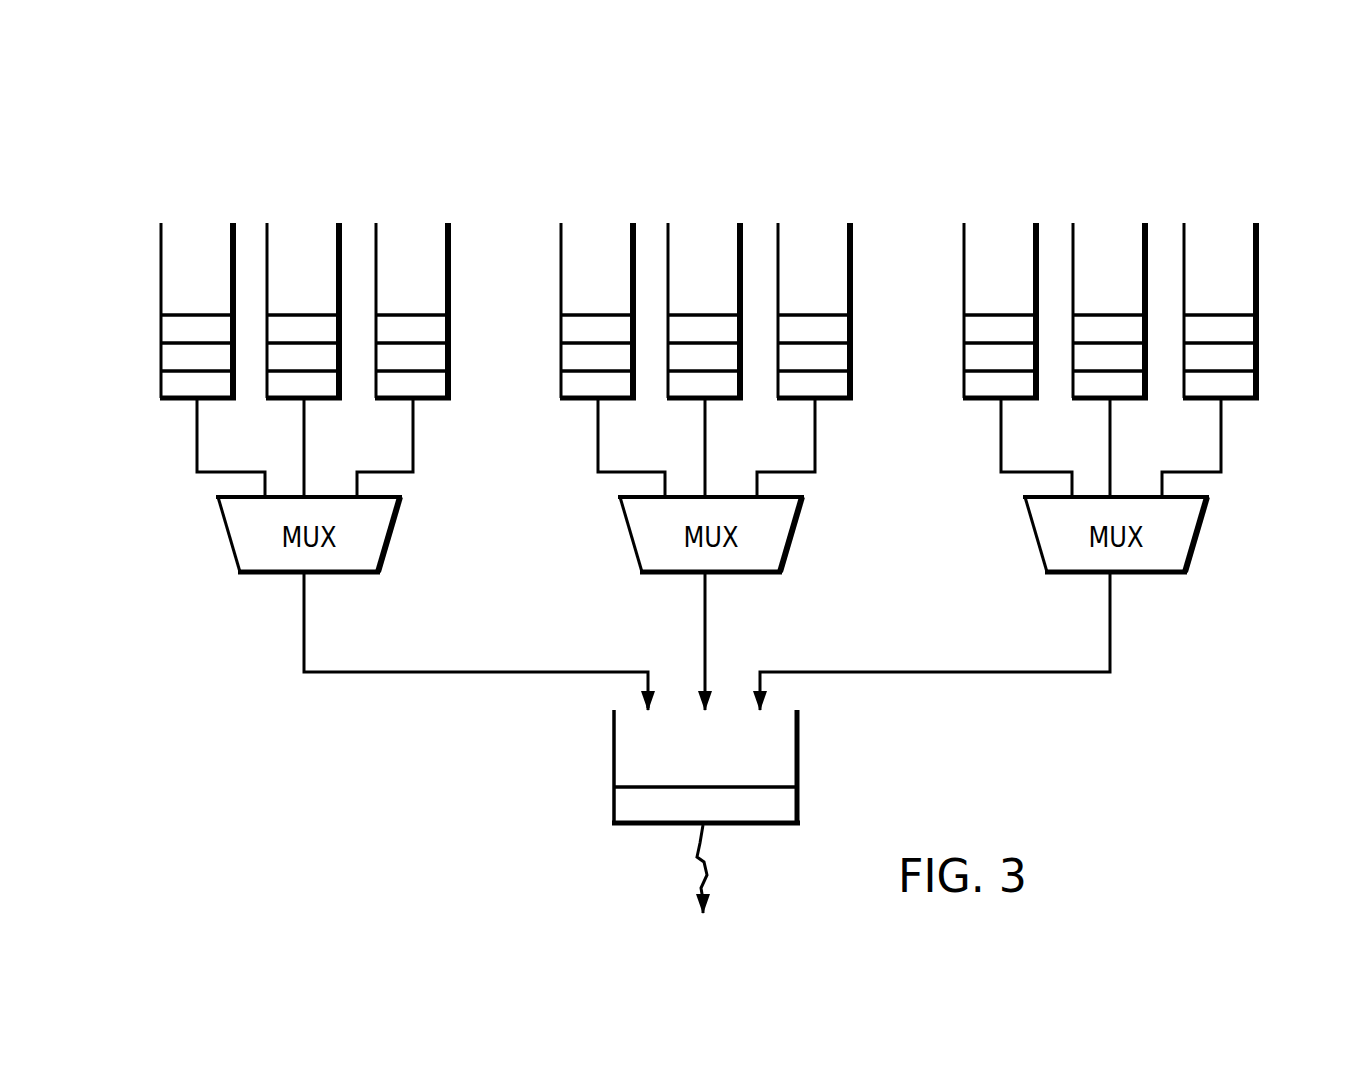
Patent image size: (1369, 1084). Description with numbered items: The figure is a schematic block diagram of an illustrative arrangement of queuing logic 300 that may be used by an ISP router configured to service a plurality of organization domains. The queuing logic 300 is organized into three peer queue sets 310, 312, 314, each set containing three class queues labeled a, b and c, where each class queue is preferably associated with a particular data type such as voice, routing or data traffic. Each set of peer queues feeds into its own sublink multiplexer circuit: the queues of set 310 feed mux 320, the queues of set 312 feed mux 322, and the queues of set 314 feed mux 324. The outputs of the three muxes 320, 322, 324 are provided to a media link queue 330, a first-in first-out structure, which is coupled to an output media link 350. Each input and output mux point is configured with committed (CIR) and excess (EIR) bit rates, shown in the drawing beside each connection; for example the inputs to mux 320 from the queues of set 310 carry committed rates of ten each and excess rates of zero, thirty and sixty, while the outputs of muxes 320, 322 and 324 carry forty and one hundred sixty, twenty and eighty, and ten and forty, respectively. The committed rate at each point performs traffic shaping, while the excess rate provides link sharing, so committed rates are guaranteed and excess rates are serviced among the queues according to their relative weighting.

The queuing logic 300 is at (1162, 126).
The peer queue set 310 is at (132, 246).
The peer queue set 312 is at (870, 246).
The peer queue set 314 is at (1286, 247).
The sublink multiplexer circuit 320 is at (391, 541).
The sublink multiplexer circuit 322 is at (793, 541).
The sublink multiplexer circuit 324 is at (1199, 541).
The media link queue 330 is at (798, 770).
The output media link 350 is at (708, 870).